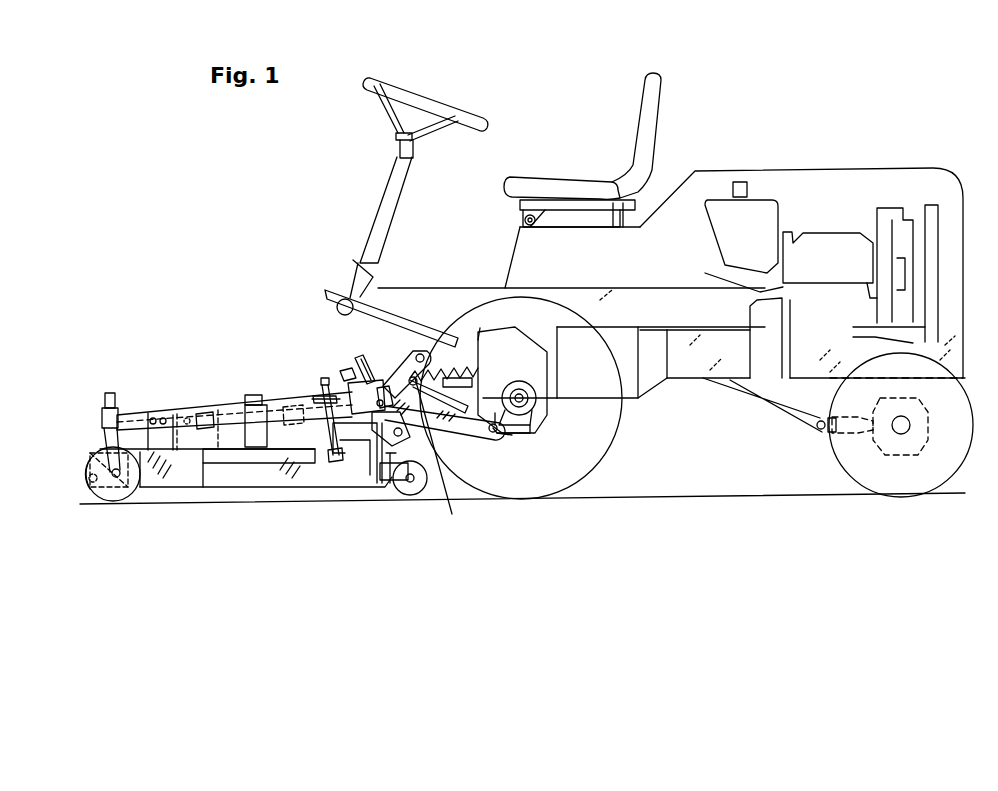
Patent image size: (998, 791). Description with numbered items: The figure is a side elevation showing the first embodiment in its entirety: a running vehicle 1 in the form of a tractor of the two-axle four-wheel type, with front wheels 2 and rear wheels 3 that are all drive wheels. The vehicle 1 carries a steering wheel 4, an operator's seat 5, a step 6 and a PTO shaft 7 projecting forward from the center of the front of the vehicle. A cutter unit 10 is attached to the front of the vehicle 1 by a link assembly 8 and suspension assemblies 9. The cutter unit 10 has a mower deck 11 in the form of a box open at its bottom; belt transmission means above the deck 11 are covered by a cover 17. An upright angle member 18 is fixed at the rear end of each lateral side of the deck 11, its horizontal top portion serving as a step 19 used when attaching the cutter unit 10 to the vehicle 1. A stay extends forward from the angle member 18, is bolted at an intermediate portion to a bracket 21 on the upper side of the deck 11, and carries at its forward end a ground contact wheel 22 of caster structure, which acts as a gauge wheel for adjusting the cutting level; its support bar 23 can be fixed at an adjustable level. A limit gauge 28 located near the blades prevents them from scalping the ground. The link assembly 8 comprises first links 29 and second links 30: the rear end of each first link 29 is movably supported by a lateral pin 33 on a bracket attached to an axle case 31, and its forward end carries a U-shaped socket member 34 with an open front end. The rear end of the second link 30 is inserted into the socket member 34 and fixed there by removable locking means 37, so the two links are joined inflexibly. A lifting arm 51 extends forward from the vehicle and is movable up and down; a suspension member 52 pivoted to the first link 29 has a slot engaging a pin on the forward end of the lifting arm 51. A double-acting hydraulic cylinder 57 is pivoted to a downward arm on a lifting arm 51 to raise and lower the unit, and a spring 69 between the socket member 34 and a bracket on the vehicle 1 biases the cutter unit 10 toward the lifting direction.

The running vehicle 1 is at (745, 172).
The front wheels 2 is at (609, 426).
The rear wheels 3 is at (962, 416).
The steering wheel 4 is at (462, 113).
The operator's seat 5 is at (633, 136).
The step 6 is at (400, 322).
The PTO shaft 7 is at (462, 377).
The link assembly 8 is at (212, 414).
The suspension assemblies 9 is at (312, 403).
The cutter unit 10 is at (193, 493).
The mower deck 11 is at (295, 480).
The cover 17 is at (237, 455).
The upright angle member 18 is at (377, 455).
The step 19 is at (362, 424).
The bracket 21 is at (157, 440).
The ground contact wheel 22 is at (117, 497).
The support bar 23 is at (105, 400).
The limit gauge 28 is at (420, 483).
The first link 29 is at (472, 427).
The second link 30 is at (250, 412).
The axle case 31 is at (535, 413).
The lateral pin 33 is at (497, 431).
The socket member 34 is at (347, 381).
The locking means 37 is at (446, 457).
The lifting arm 51 is at (405, 360).
The suspension member 52 is at (361, 361).
The double-acting hydraulic cylinder 57 is at (475, 383).
The spring 69 is at (443, 362).